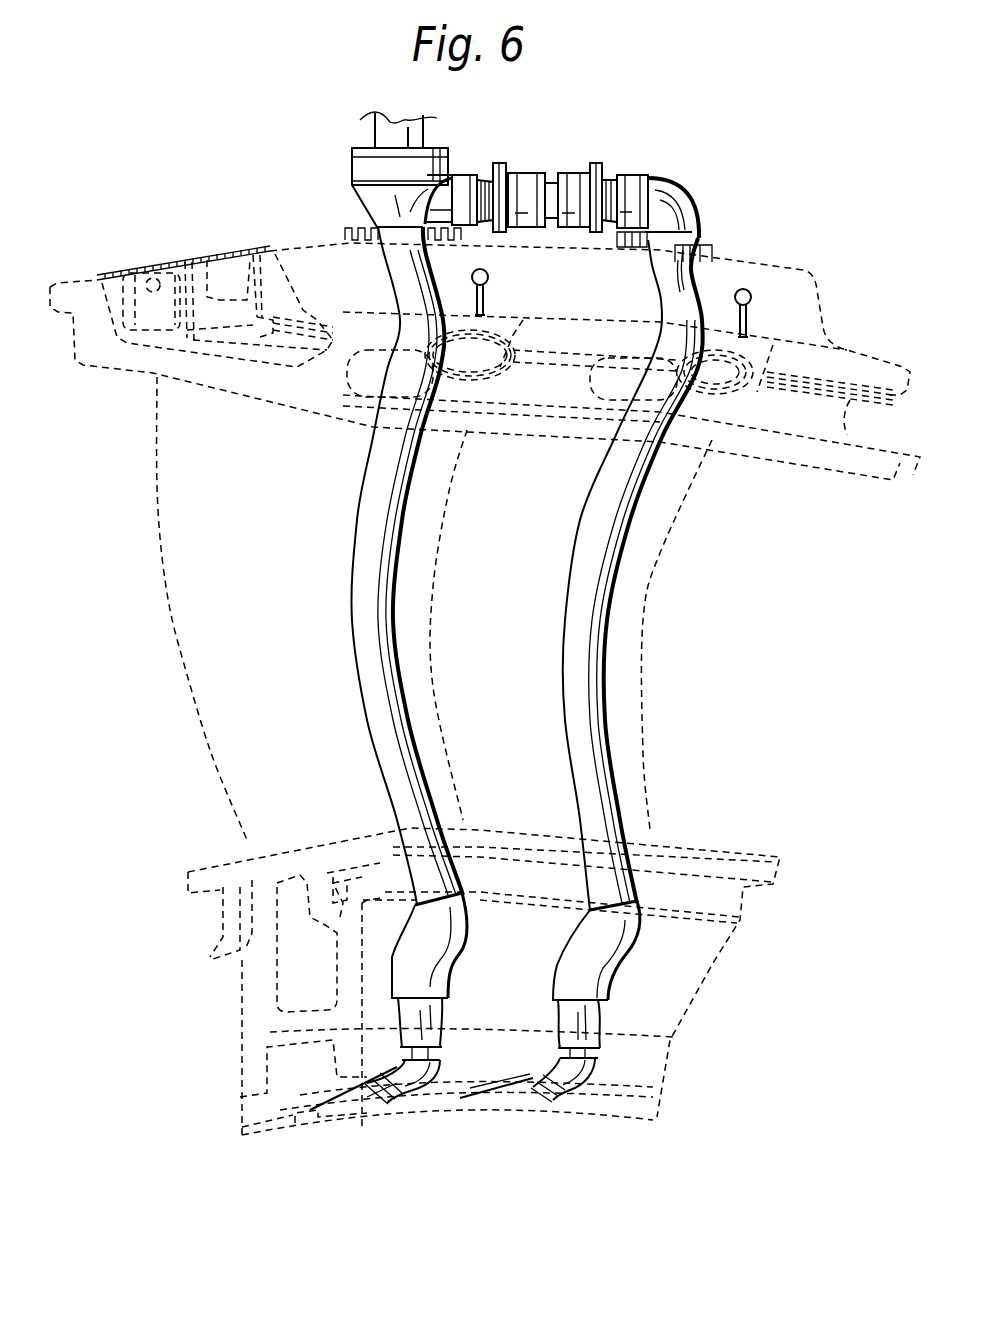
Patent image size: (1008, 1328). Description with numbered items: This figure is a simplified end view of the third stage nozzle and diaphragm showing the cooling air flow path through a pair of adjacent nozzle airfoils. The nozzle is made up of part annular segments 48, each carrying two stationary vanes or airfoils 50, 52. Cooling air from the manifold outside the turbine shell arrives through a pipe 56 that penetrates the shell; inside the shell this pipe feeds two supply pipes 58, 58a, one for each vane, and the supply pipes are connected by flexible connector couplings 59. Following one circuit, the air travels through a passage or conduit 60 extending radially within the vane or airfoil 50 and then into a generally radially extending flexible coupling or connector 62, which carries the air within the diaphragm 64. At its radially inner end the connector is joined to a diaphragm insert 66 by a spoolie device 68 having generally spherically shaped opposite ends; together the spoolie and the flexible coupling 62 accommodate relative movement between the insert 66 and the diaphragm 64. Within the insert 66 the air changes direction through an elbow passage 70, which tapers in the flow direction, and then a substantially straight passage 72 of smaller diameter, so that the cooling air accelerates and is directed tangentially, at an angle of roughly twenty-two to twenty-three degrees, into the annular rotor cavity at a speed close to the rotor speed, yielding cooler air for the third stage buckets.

The part annular segment 48 is at (787, 284).
The stationary vane or airfoil 50 is at (215, 657).
The stationary vane or airfoil 52 is at (623, 693).
The pipe 56 is at (390, 137).
The supply pipe 58 is at (410, 288).
The supply pipe 58a is at (667, 295).
The flexible connector coupling 59 is at (558, 174).
The passage or conduit 60 is at (367, 620).
The flexible coupling or connector 62 is at (463, 945).
The diaphragm 64 is at (670, 977).
The diaphragm insert 66 is at (647, 1060).
The spoolie device 68 is at (420, 1020).
The elbow passage 70 is at (420, 1067).
The substantially straight passage 72 is at (380, 1110).